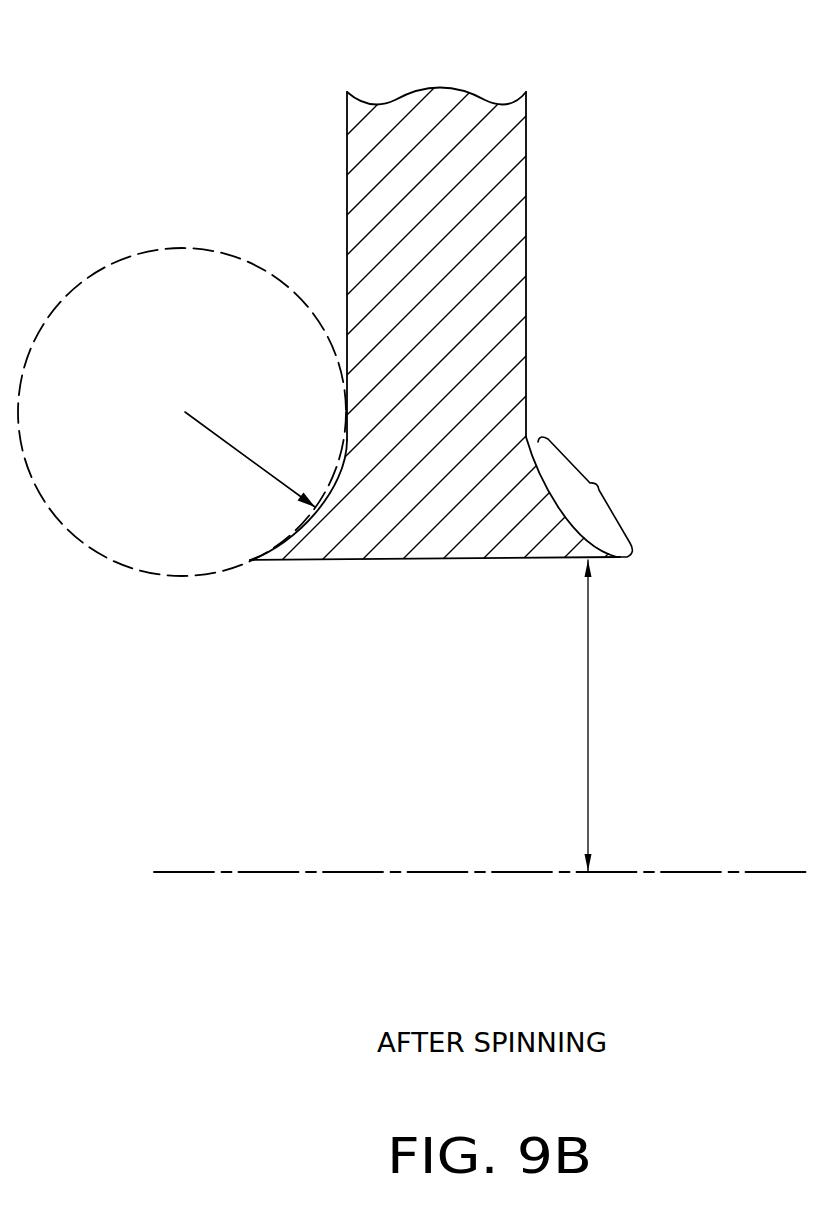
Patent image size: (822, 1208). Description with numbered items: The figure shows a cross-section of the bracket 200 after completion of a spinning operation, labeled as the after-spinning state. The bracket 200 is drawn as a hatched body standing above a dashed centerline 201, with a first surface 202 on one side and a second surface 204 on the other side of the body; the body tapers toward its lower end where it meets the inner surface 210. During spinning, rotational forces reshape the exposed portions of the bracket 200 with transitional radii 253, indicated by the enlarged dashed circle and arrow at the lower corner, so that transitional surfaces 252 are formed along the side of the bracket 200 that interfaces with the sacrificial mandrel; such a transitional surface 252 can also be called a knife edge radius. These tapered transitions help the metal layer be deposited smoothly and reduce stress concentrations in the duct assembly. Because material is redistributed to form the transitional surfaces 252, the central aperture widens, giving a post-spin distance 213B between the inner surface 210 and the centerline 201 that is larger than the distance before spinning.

The bracket 200 is at (232, 76).
The centerline 201 is at (176, 872).
The first surface 202 is at (347, 182).
The second surface 204 is at (526, 178).
The inner surface 210 is at (378, 562).
The post-spin distance 213B is at (588, 702).
The transitional surface 252 is at (597, 485).
The transitional radius 253 is at (238, 452).